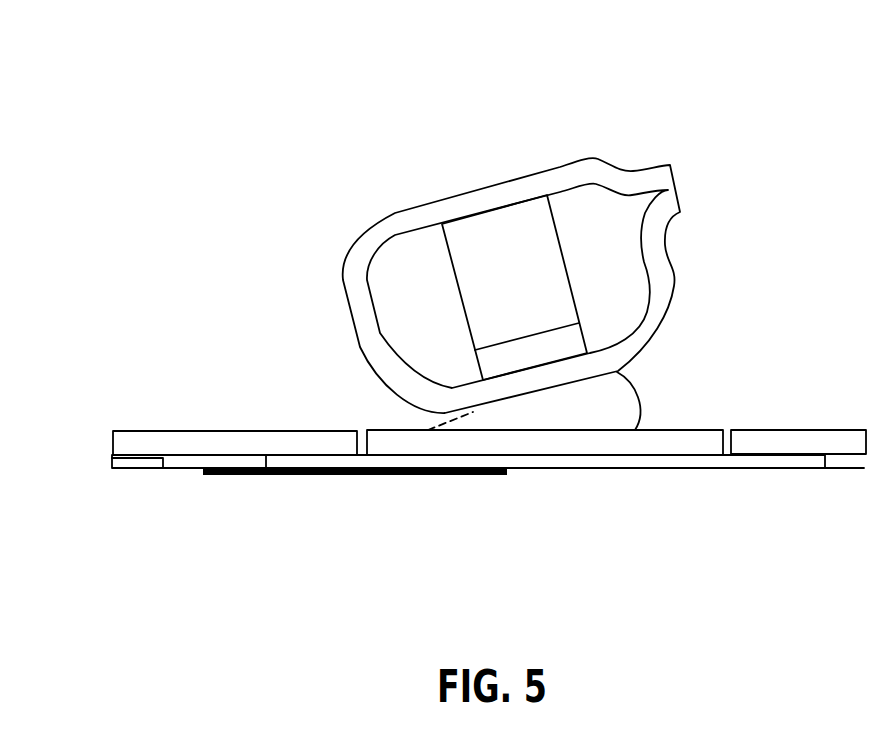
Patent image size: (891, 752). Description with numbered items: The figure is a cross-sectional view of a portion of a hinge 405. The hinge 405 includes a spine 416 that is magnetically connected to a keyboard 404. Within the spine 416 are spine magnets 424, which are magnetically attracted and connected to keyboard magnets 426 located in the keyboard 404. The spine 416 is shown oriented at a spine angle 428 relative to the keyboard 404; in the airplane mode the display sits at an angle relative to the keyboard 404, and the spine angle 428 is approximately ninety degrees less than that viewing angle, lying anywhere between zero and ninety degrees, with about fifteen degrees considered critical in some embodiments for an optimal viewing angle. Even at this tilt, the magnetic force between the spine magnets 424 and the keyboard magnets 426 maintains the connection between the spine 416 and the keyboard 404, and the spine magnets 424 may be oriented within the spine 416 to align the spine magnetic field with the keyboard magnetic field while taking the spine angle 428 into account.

The keyboard 404 is at (122, 424).
The hinge 405 is at (778, 78).
The spine 416 is at (318, 222).
The spine magnets 424 is at (487, 237).
The keyboard magnets 426 is at (420, 442).
The spine angle 428 is at (640, 396).